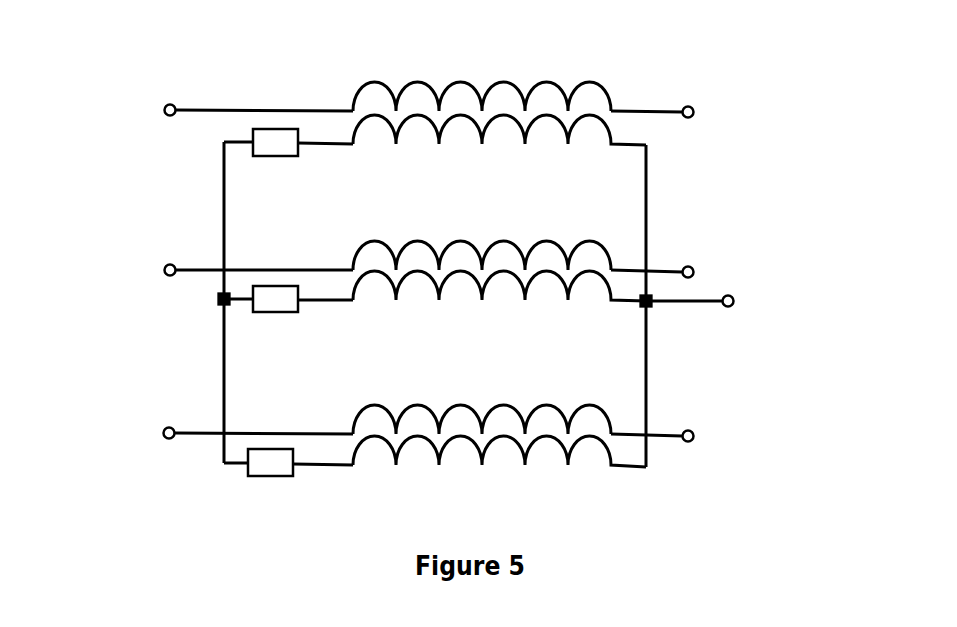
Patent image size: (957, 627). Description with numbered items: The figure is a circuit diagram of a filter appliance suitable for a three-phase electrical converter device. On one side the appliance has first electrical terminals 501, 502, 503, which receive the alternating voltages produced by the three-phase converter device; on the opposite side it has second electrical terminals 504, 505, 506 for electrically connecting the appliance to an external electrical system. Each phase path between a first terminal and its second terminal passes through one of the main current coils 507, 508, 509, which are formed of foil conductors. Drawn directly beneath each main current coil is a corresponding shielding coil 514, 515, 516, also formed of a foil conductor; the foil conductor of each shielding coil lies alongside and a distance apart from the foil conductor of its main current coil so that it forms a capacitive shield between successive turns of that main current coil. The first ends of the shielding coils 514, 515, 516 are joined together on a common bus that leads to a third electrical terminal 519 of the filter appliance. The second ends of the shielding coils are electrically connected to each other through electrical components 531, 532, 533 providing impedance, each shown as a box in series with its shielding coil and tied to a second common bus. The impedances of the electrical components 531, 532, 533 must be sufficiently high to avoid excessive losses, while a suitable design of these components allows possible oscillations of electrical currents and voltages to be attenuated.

The first electrical terminal 501 is at (694, 112).
The first electrical terminal 502 is at (694, 272).
The first electrical terminal 503 is at (694, 436).
The second electrical terminal 504 is at (164, 110).
The second electrical terminal 505 is at (164, 270).
The second electrical terminal 506 is at (163, 433).
The main current coil 507 is at (458, 80).
The main current coil 508 is at (463, 241).
The main current coil 509 is at (457, 404).
The shielding coil 514 is at (465, 117).
The shielding coil 515 is at (475, 275).
The shielding coil 516 is at (467, 440).
The third electrical terminal 519 is at (734, 301).
The electrical component providing impedance 531 is at (272, 157).
The electrical component providing impedance 532 is at (272, 312).
The electrical component providing impedance 533 is at (266, 476).